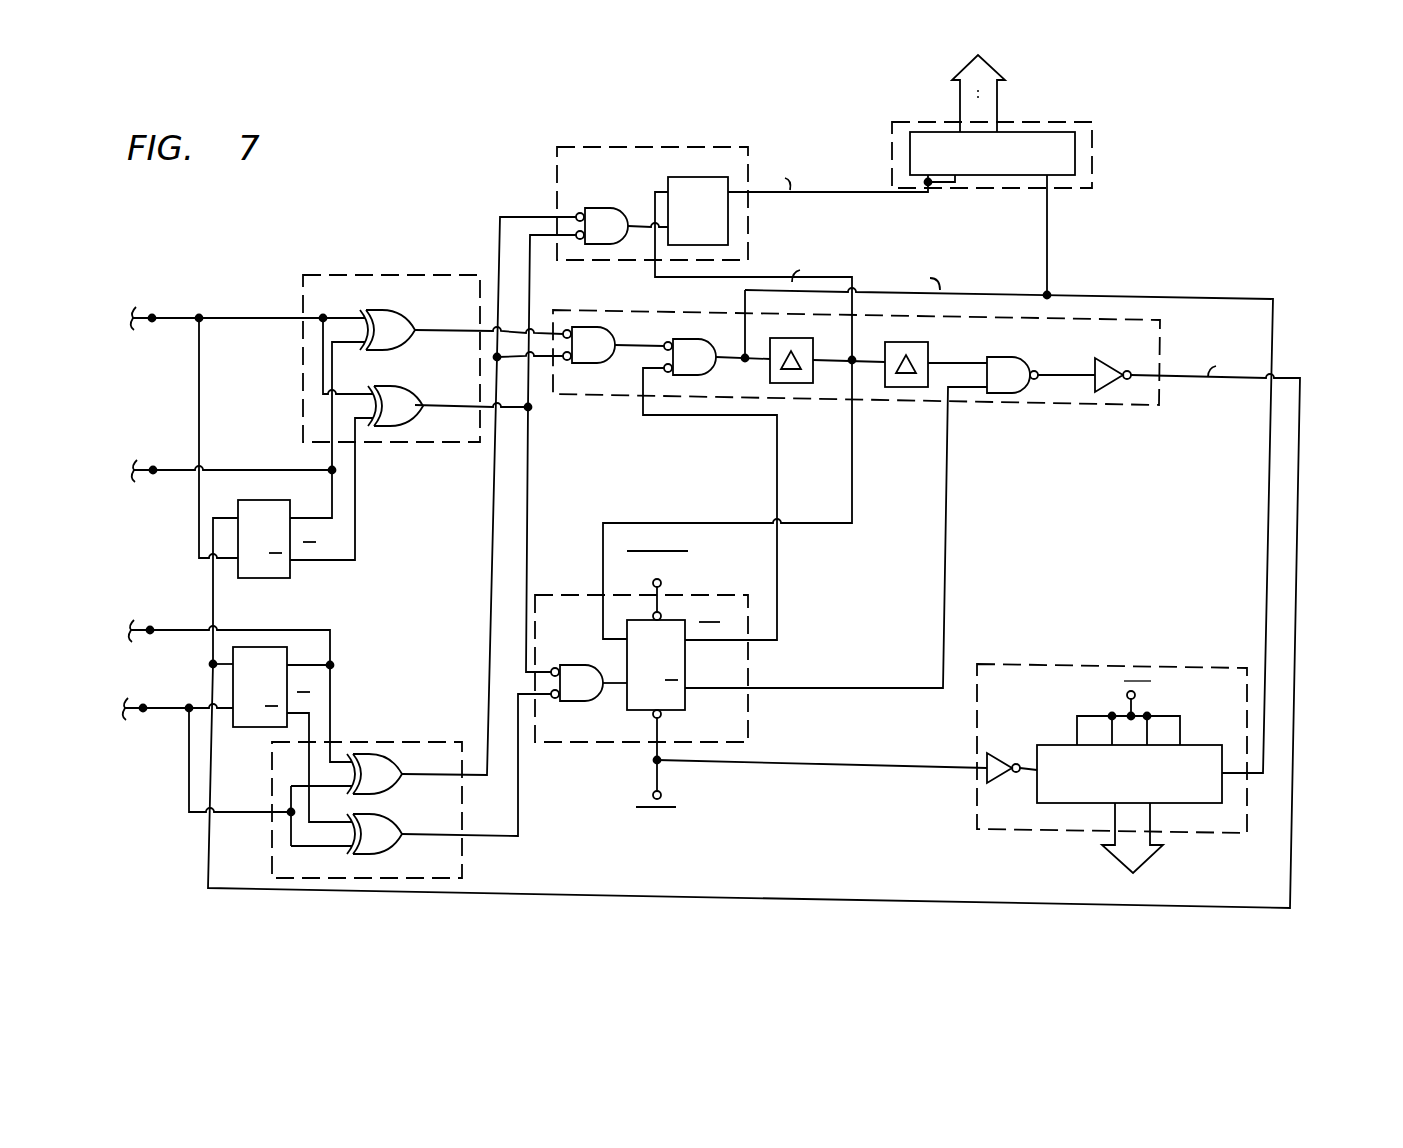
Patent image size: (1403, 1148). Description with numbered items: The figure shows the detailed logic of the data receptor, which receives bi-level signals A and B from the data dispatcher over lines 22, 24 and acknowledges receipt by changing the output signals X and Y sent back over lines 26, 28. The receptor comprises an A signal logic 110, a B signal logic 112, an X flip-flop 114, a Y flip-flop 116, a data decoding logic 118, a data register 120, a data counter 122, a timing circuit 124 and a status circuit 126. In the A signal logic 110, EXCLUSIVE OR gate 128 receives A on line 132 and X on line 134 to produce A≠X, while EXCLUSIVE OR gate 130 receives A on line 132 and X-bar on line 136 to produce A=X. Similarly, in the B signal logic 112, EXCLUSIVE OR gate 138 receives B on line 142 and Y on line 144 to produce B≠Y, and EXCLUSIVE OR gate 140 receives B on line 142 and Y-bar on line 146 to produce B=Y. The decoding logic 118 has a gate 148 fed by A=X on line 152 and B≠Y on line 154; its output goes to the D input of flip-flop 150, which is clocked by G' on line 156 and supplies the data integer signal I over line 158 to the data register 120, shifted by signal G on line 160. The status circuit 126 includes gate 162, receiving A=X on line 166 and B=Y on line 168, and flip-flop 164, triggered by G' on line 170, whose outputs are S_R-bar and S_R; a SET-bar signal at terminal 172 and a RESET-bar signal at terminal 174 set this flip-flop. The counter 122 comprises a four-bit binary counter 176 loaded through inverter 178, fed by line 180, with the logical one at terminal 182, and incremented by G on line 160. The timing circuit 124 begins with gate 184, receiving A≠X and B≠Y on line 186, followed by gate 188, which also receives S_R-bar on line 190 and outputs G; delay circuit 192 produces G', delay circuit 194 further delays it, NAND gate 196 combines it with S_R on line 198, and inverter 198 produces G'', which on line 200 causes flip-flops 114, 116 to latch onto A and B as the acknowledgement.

The line 22 is at (147, 320).
The line 24 is at (140, 716).
The line 26 is at (144, 476).
The line 28 is at (143, 634).
The A signal logic 110 is at (405, 275).
The B signal logic 112 is at (395, 742).
The X flip-flop 114 is at (290, 580).
The Y flip-flop 116 is at (253, 647).
The data decoding logic 118 is at (727, 148).
The data register 120 is at (1095, 153).
The data counter 122 is at (1050, 663).
The timing circuit 124 is at (1090, 410).
The status circuit 126 is at (593, 595).
The EXCLUSIVE OR gate 128 is at (377, 312).
The EXCLUSIVE OR gate 130 is at (372, 387).
The line 132 is at (235, 318).
The line 134 is at (330, 458).
The line 136 is at (357, 505).
The EXCLUSIVE OR gate 138 is at (375, 754).
The EXCLUSIVE OR gate 140 is at (362, 815).
The line 142 is at (189, 776).
The line 144 is at (336, 690).
The line 146 is at (305, 730).
The gate 148 is at (600, 208).
The D-type edge triggered flip-flop 150 is at (667, 178).
The line 152 is at (530, 415).
The line 154 is at (490, 526).
The line 156 is at (868, 262).
The line 158 is at (830, 196).
The line 160 is at (982, 292).
The gate 162 is at (584, 664).
The D-type edge triggered flip-flop 164 is at (628, 714).
The line 166 is at (530, 486).
The line 168 is at (518, 806).
The line 170 is at (677, 520).
The terminal 172 is at (661, 796).
The terminal 174 is at (661, 581).
The four-bit binary counter 176 is at (1055, 745).
The inverter 178 is at (1011, 736).
The line 180 is at (953, 768).
The terminal 182 is at (1126, 694).
The gate 184 is at (582, 364).
The line 186 is at (513, 362).
The gate 188 is at (714, 344).
The line 190 is at (779, 500).
The delay circuit 192 is at (788, 338).
The delay circuit 194 is at (926, 343).
The NAND gate 196 is at (1004, 357).
The inverter 198 is at (1106, 358).
The line 200 is at (1298, 530).